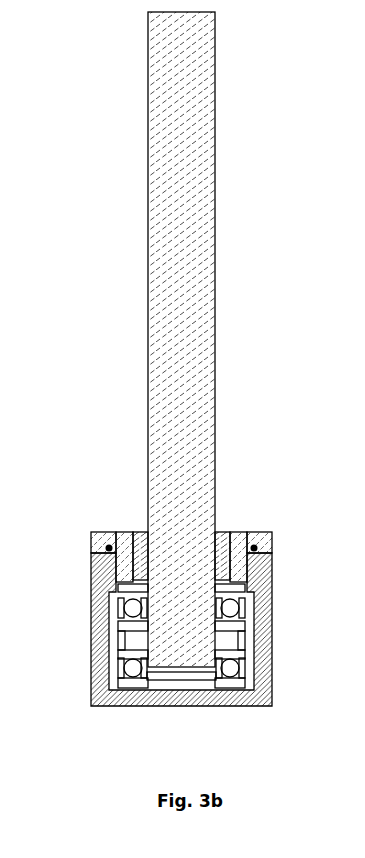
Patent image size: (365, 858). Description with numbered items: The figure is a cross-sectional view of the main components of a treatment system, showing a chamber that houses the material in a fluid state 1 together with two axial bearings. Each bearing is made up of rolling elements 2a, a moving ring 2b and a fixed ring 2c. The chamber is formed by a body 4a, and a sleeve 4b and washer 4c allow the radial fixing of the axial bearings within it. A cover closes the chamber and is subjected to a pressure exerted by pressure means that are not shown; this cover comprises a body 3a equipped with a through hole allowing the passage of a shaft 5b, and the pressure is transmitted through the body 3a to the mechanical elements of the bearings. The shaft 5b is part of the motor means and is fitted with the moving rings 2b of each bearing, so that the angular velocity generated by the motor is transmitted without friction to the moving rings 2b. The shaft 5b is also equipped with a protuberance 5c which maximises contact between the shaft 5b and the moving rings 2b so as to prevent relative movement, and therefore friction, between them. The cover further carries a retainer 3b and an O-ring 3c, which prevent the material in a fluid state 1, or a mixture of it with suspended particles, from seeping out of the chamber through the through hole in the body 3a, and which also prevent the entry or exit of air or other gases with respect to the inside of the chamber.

The material in a fluid state 1 is at (242, 628).
The rolling elements 2a is at (105, 578).
The moving ring 2b is at (105, 607).
The fixed ring 2c is at (105, 550).
The body 3a is at (253, 532).
The retainer 3b is at (222, 532).
The O-ring 3c is at (273, 545).
The body 4a is at (273, 602).
The sleeve 4b is at (258, 551).
The washer 4c is at (273, 672).
The shaft 5b is at (215, 272).
The protuberance 5c is at (215, 633).